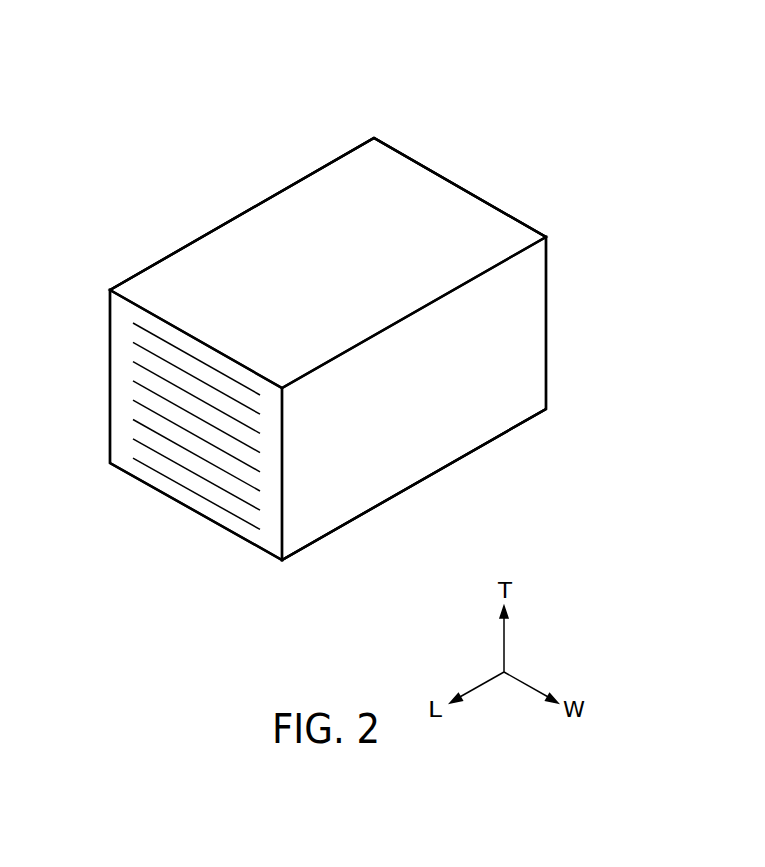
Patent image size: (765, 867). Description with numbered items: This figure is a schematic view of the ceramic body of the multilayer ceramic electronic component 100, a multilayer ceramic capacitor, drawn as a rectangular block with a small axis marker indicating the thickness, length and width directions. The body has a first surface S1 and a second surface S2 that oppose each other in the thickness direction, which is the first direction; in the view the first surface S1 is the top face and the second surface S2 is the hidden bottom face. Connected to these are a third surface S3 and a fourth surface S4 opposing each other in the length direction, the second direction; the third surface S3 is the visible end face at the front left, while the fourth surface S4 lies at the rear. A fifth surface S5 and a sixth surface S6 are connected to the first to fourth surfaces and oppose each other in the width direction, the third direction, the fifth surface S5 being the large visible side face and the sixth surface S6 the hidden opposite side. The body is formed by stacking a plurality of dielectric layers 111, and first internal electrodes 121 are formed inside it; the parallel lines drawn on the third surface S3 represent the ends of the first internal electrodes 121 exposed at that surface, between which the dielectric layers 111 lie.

The multilayer ceramic electronic component 100 is at (136, 40).
The dielectric layer 111 is at (135, 374).
The first internal electrode 121 is at (133, 323).
The first surface S1 is at (328, 198).
The second surface S2 is at (337, 512).
The third surface S3 is at (189, 486).
The fourth surface S4 is at (448, 209).
The fifth surface S5 is at (528, 338).
The sixth surface S6 is at (174, 280).